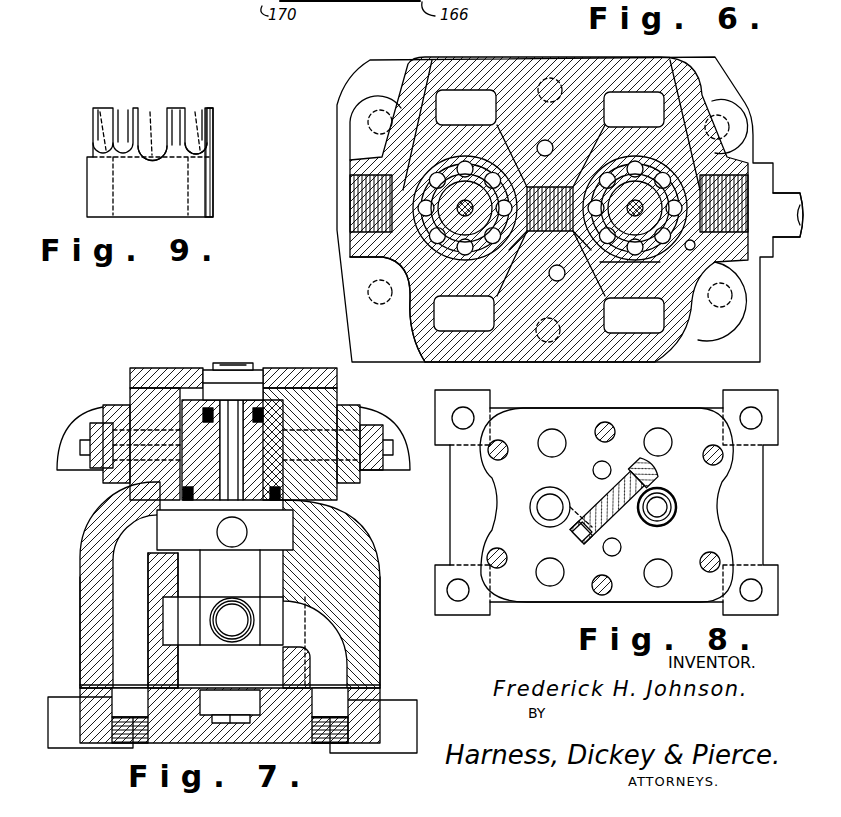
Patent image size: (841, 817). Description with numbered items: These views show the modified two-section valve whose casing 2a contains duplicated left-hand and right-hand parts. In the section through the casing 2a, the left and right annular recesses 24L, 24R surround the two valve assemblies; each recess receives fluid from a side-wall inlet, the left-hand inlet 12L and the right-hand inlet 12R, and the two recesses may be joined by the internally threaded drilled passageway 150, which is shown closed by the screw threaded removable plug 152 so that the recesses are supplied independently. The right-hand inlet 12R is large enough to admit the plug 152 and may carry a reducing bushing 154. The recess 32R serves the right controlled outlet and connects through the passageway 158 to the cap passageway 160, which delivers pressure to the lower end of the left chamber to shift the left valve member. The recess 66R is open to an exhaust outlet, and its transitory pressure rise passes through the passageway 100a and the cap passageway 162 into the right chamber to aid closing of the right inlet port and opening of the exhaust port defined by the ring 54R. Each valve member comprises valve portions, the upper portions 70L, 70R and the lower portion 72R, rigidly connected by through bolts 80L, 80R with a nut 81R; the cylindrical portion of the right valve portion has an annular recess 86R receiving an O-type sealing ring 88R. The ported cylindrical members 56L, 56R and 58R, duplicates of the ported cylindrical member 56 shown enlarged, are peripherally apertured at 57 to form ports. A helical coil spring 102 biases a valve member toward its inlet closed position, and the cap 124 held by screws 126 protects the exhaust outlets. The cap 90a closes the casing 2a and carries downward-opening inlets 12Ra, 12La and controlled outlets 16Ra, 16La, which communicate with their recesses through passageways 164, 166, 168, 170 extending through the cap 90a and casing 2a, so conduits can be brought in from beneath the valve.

In FIG. 7, the casing 2a is at (390, 552).
In FIG. 6, the left-hand inlet 12L is at (345, 218).
In FIG. 6, the right-hand inlet 12R is at (760, 262).
In FIG. 8, the left downward inlet 12La is at (550, 430).
In FIG. 7, the right downward inlet 12Ra is at (340, 701).
In FIG. 8, the right downward inlet 12Ra is at (652, 430).
In FIG. 8, the left downward controlled outlet 16La is at (548, 585).
In FIG. 7, the right downward controlled outlet 16Ra is at (125, 698).
In FIG. 8, the right downward controlled outlet 16Ra is at (656, 587).
In FIG. 6, the left annular recess 24L is at (480, 151).
In FIG. 6, the right annular recess 24R is at (645, 151).
In FIG. 7, the right annular recess 32R is at (290, 540).
In FIG. 7, the right exhaust port ring 54R is at (265, 470).
In FIG. 9, the ported cylindrical member 56 is at (226, 167).
In FIG. 6, the left ported cylindrical member 56L is at (549, 275).
In FIG. 6, the right ported cylindrical member 56R is at (656, 290).
In FIG. 9, the peripheral apertures 57 is at (190, 118).
In FIG. 7, the right lower ported cylindrical member 58R is at (275, 410).
In FIG. 7, the right annular recess 66R is at (128, 490).
In FIG. 6, the left valve portion 70L is at (468, 236).
In FIG. 6, the right valve portion 70R is at (658, 240).
In FIG. 7, the right lower valve portion 72R is at (262, 412).
In FIG. 6, the left through bolt 80L is at (482, 198).
In FIG. 6, the right through bolt 80R is at (640, 216).
In FIG. 7, the right nut 81R is at (250, 372).
In FIG. 7, the right annular recess 86R is at (200, 368).
In FIG. 7, the right O-type sealing ring 88R is at (205, 410).
In FIG. 7, the cap 90a is at (350, 703).
In FIG. 8, the cap 90a is at (511, 412).
In FIG. 6, the passageway 100a is at (583, 128).
In FIG. 8, the helical coil spring 102 is at (647, 530).
In FIG. 7, the cap 124 is at (100, 425).
In FIG. 7, the screws 126 is at (90, 445).
In FIG. 7, the drilled passageway 150 is at (232, 645).
In FIG. 6, the removable plug 152 is at (533, 265).
In FIG. 7, the removable plug 152 is at (248, 575).
In FIG. 6, the reducing bushing 154 is at (795, 152).
In FIG. 6, the passageway 158 is at (572, 290).
In FIG. 8, the passageway 160 is at (566, 528).
In FIG. 7, the passageway 162 is at (227, 692).
In FIG. 8, the passageway 162 is at (633, 468).
In FIG. 6, the passageway 164 is at (642, 94).
In FIG. 7, the passageway 164 is at (337, 658).
In FIG. 6, the passageway 166 is at (645, 332).
In FIG. 7, the passageway 166 is at (127, 628).
In FIG. 8, the passageway 166 is at (648, 410).
In FIG. 6, the passageway 168 is at (465, 92).
In FIG. 6, the passageway 170 is at (470, 328).
In FIG. 8, the passageway 170 is at (500, 380).